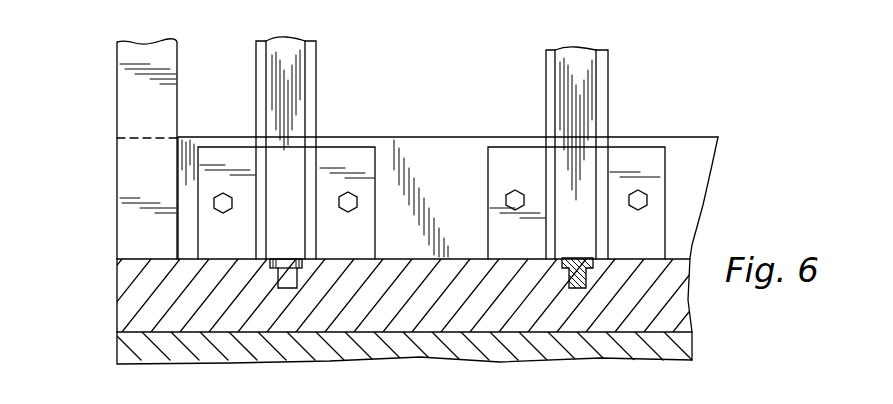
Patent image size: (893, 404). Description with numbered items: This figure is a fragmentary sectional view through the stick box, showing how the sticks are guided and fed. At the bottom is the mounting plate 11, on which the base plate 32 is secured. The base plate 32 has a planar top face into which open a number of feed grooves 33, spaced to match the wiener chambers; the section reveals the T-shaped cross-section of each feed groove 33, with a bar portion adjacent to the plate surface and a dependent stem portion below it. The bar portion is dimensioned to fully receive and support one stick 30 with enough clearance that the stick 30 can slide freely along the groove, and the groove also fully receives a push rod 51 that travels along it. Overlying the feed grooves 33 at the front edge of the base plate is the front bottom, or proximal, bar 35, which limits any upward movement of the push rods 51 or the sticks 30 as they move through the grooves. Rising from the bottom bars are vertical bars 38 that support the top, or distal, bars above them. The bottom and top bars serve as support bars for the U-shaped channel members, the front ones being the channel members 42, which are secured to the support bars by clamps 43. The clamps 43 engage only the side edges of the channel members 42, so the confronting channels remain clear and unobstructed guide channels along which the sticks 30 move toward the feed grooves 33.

The mounting plate 11 is at (138, 347).
The base plate 32 is at (140, 294).
The feed groove 33 is at (283, 275).
The stick 30 is at (285, 258).
The front bottom bar 35 is at (462, 158).
The vertical bar 38 is at (130, 89).
The front U-shaped channel member 42 is at (287, 62).
The clamp 43 is at (347, 160).
The push rod 51 is at (580, 260).